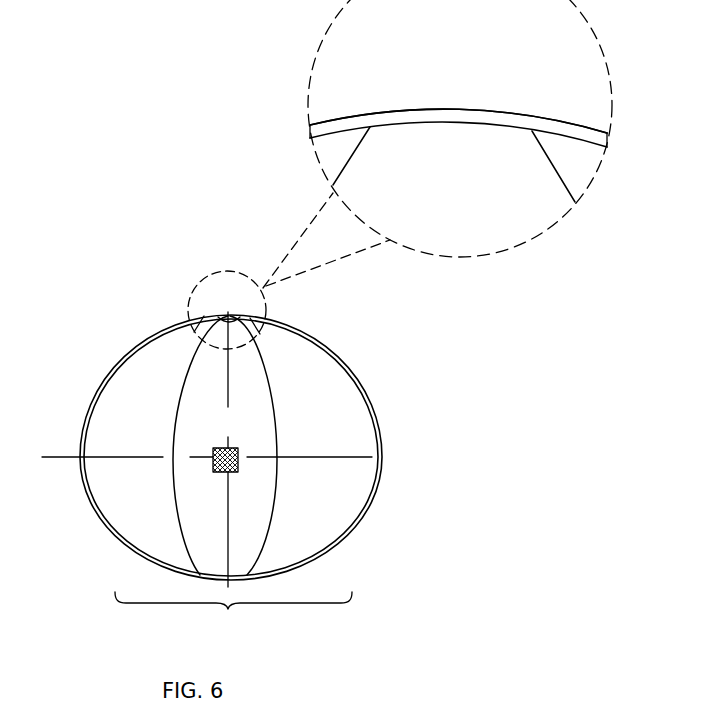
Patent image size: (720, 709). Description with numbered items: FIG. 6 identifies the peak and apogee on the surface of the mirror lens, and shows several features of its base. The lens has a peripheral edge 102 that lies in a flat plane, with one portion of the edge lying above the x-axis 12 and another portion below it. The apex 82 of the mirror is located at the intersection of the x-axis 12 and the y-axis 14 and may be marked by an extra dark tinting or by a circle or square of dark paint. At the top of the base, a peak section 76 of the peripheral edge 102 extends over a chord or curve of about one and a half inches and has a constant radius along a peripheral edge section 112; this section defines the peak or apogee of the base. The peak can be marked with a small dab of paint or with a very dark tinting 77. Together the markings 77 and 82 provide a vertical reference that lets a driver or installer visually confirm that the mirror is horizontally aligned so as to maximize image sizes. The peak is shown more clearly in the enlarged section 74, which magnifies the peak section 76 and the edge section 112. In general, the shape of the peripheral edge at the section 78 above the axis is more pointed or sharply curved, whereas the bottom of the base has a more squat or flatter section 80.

The x-axis 12 is at (53, 460).
The y-axis 14 is at (230, 370).
The enlarged section 74 is at (572, 67).
The peak section 76 is at (445, 112).
The dark tinting 77 is at (252, 318).
The edge section above the axis 78 is at (103, 378).
The flatter section 80 is at (233, 615).
The apex 82 is at (213, 470).
The peripheral edge 102 is at (382, 442).
The peripheral edge section 112 is at (492, 106).